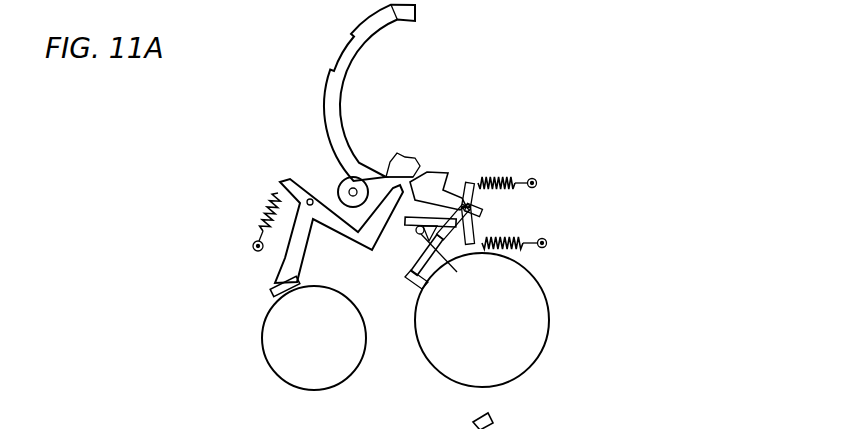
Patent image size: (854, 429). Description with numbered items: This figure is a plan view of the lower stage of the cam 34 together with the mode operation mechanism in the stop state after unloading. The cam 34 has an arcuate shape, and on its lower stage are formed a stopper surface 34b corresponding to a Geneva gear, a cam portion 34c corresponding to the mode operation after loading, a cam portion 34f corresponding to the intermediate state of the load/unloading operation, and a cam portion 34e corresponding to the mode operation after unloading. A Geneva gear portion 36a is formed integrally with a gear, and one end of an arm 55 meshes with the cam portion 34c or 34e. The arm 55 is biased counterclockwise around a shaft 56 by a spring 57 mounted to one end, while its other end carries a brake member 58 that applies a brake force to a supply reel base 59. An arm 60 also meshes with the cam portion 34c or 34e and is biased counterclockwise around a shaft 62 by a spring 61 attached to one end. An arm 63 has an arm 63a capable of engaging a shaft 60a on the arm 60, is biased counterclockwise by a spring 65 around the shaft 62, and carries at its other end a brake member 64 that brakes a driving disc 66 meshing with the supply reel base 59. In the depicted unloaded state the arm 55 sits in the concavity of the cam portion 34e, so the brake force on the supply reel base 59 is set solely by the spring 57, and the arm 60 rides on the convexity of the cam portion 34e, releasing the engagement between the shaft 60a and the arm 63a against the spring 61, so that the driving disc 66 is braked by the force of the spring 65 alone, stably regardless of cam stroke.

The cam 34 is at (344, 126).
The stopper surface 34b is at (394, 23).
The cam portion 34c is at (349, 39).
The cam portion 34e is at (390, 163).
The cam portion 34f is at (323, 110).
The Geneva gear portion 36a is at (343, 183).
The arm 55 is at (356, 234).
The shaft 56 is at (310, 199).
The spring 57 is at (262, 206).
The brake member 58 is at (272, 292).
The supply reel base 59 is at (354, 351).
The arm 60 is at (451, 195).
The shaft 60a is at (449, 250).
The spring 61 is at (498, 180).
The shaft 62 is at (478, 208).
The arm 63 is at (411, 266).
The arm 63a is at (405, 227).
The brake member 64 is at (420, 287).
The spring 65 is at (541, 238).
The driving disc 66 is at (514, 366).